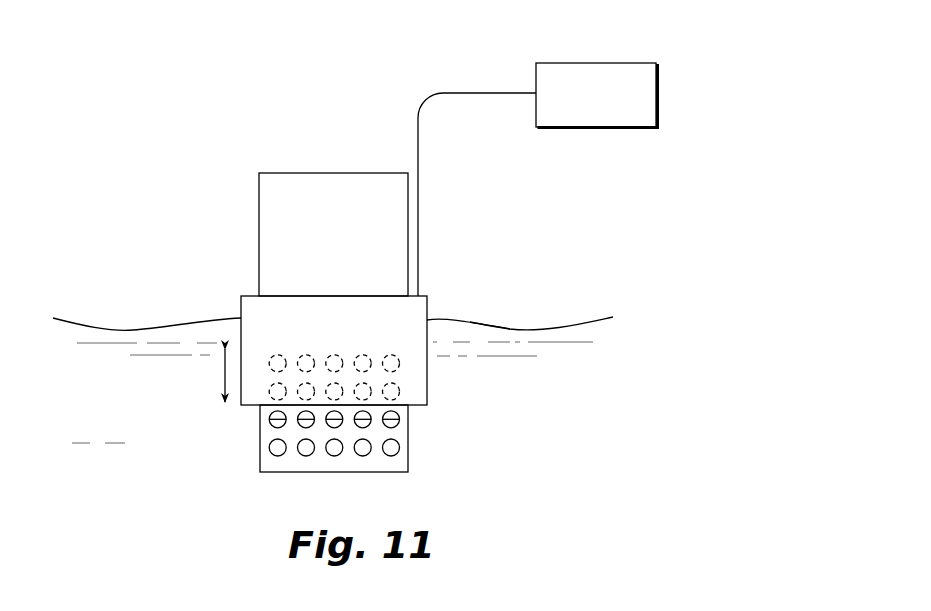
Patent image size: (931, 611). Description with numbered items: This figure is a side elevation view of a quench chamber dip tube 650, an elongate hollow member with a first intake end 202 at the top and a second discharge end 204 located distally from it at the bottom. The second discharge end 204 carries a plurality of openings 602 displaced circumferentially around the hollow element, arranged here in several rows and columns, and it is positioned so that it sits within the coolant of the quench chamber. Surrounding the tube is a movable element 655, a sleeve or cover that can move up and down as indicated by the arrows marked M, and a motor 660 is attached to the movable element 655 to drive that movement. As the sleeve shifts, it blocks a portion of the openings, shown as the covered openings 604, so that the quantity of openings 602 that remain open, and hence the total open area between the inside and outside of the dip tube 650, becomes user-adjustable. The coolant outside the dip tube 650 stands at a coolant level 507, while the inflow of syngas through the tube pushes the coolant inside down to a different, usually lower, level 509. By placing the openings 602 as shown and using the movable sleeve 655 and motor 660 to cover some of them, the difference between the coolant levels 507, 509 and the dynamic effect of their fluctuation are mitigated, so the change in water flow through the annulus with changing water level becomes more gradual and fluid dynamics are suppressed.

The quench chamber dip tube 650 is at (166, 114).
The first intake end 202 is at (350, 164).
The motor 660 is at (656, 85).
The movable element 655 is at (255, 296).
The second discharge end 204 is at (430, 476).
The blocked openings 604 is at (306, 354).
The coolant level within the dip tube 509 is at (393, 417).
The openings 602 is at (328, 450).
The coolant level outside the dip tube 507 is at (509, 326).